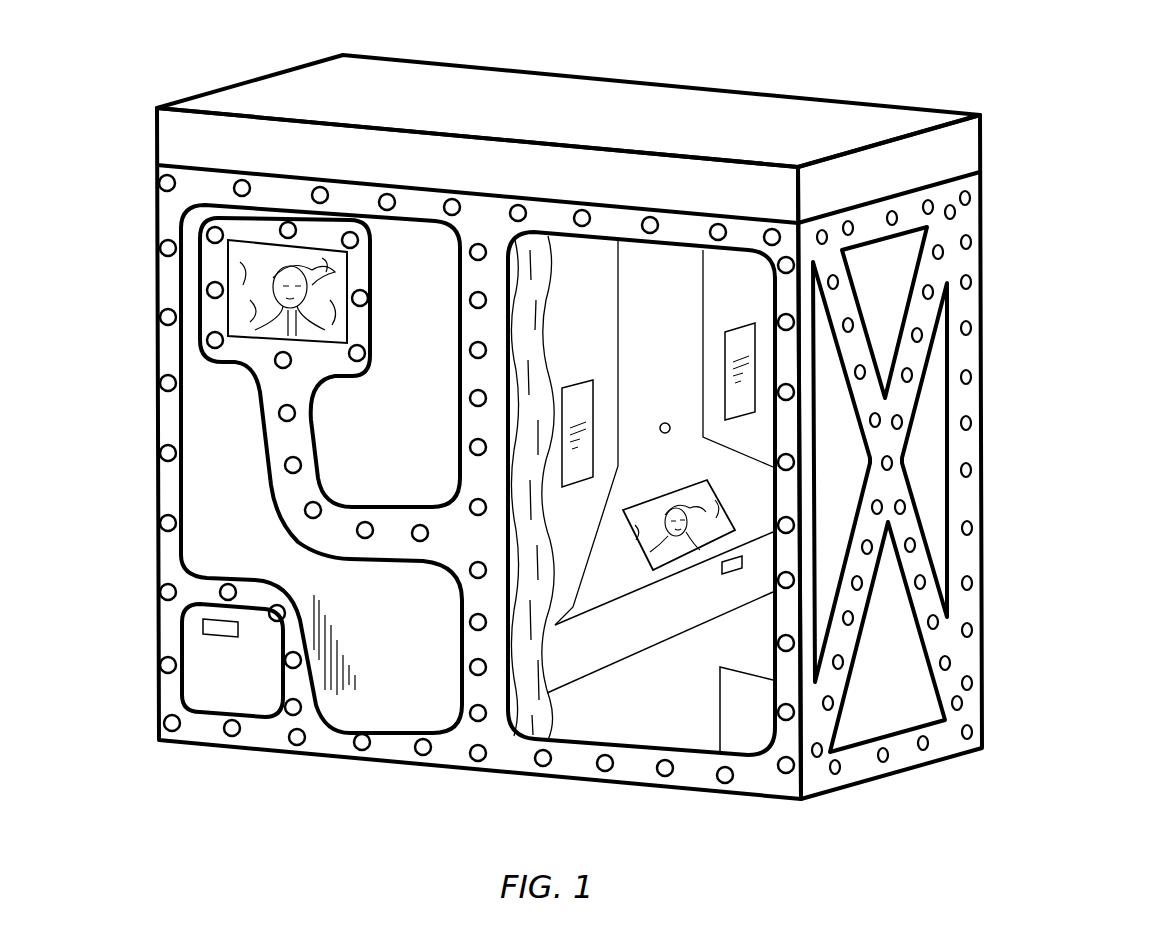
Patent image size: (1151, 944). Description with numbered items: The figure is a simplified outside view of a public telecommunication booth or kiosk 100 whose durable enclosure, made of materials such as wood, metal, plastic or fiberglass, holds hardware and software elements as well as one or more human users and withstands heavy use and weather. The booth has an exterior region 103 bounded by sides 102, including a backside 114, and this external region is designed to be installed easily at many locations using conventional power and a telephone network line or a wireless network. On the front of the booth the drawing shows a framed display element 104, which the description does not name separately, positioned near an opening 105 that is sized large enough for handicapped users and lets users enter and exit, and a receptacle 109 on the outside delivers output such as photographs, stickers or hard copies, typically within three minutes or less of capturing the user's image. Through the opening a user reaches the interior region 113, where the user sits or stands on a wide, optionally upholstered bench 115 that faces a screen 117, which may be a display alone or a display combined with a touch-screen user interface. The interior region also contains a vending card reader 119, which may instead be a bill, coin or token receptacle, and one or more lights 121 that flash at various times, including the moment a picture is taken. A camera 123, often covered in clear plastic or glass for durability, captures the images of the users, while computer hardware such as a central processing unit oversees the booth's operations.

The booth or kiosk 100 is at (917, 785).
The sides 102 is at (395, 720).
The exterior region 103 is at (340, 703).
The exterior photo display 104 is at (252, 248).
The opening 105 is at (763, 570).
The receptacle 109 is at (222, 637).
The interior region 113 is at (673, 737).
The backside 114 is at (935, 467).
The bench 115 is at (743, 737).
The screen 117 is at (723, 493).
The vending card reader 119 is at (728, 570).
The lights 121 is at (568, 385).
The camera 123 is at (667, 433).